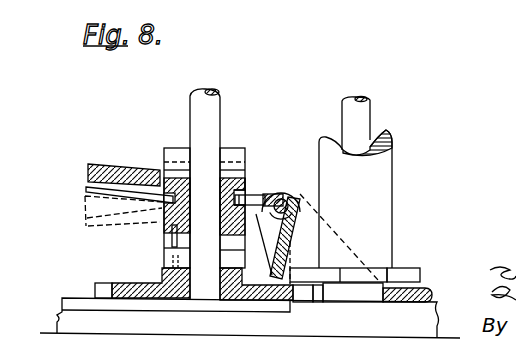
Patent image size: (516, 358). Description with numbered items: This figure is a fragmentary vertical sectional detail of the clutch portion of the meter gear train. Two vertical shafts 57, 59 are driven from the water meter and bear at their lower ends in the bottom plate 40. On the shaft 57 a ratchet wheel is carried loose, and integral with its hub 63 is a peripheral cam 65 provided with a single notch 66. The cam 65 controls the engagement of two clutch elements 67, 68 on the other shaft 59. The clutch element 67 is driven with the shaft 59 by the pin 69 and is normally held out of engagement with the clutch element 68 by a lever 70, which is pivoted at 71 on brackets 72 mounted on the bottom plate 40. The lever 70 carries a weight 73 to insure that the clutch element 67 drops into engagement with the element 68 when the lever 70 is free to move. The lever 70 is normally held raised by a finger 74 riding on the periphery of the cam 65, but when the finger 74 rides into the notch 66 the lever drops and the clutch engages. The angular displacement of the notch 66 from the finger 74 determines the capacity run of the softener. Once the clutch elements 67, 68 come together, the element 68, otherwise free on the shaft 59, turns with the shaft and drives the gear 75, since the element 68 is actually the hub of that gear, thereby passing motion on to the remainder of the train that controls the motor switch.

The bottom plate 40 is at (428, 289).
The vertical shaft 57 is at (360, 113).
The vertical shaft 59 is at (205, 117).
The hub 63 is at (389, 163).
The peripheral cam 65 is at (406, 270).
The notch 66 is at (347, 273).
The clutch element 67 is at (247, 185).
The clutch element 68 is at (162, 272).
The pin 69 is at (233, 177).
The lever 70 is at (85, 189).
The pivot 71 is at (301, 204).
The brackets 72 is at (299, 207).
The weight 73 is at (93, 164).
The finger 74 is at (271, 256).
The gear 75 is at (93, 283).